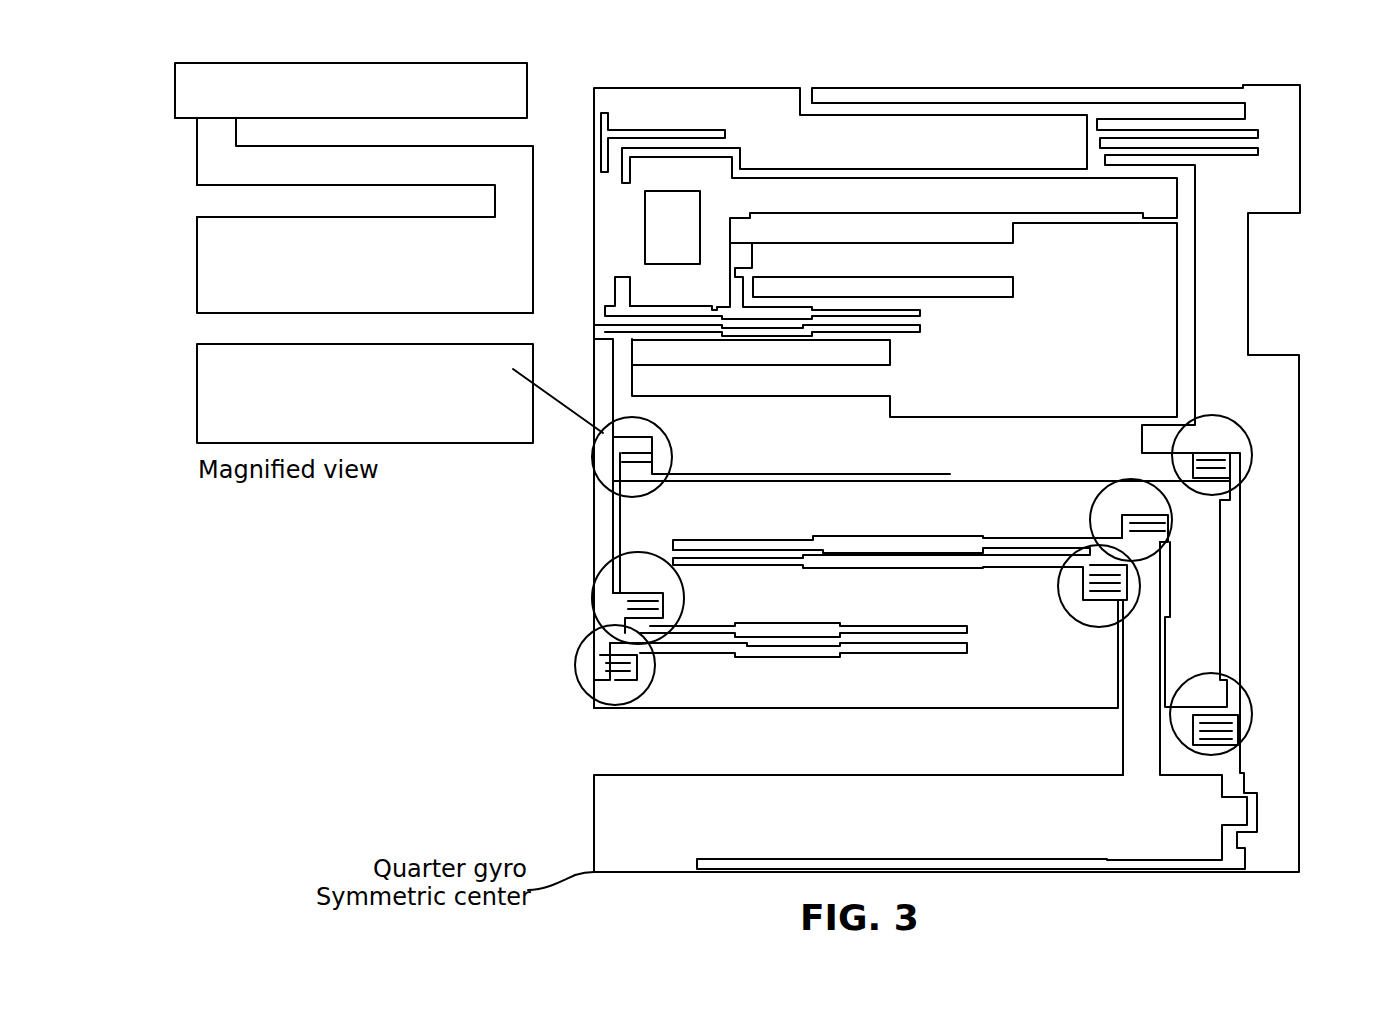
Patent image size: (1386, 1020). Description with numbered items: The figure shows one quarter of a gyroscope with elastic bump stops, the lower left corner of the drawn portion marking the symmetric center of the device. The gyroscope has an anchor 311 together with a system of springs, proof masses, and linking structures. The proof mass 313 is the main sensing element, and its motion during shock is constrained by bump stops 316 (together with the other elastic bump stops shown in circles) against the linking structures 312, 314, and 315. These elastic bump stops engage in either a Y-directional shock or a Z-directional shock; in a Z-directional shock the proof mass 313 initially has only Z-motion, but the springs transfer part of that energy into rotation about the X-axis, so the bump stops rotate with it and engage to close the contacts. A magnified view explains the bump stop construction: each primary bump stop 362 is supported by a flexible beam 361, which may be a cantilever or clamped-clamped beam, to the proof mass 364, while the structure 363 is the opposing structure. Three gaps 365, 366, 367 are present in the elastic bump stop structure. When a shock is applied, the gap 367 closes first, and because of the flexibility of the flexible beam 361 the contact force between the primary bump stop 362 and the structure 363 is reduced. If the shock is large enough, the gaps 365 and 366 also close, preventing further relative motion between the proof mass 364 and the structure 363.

The anchor 311 is at (645, 222).
The linking structure 312 is at (594, 520).
The proof mass 313 is at (933, 608).
The linking structure 314 is at (1125, 750).
The linking structure 315 is at (1285, 627).
The bump stop 316 is at (672, 456).
The flexible beam 361 is at (228, 176).
The primary bump stop 362 is at (216, 262).
The structure 363 is at (216, 406).
The proof mass 364 is at (398, 85).
The gap 365 is at (265, 130).
The gap 366 is at (216, 205).
The gap 367 is at (216, 326).